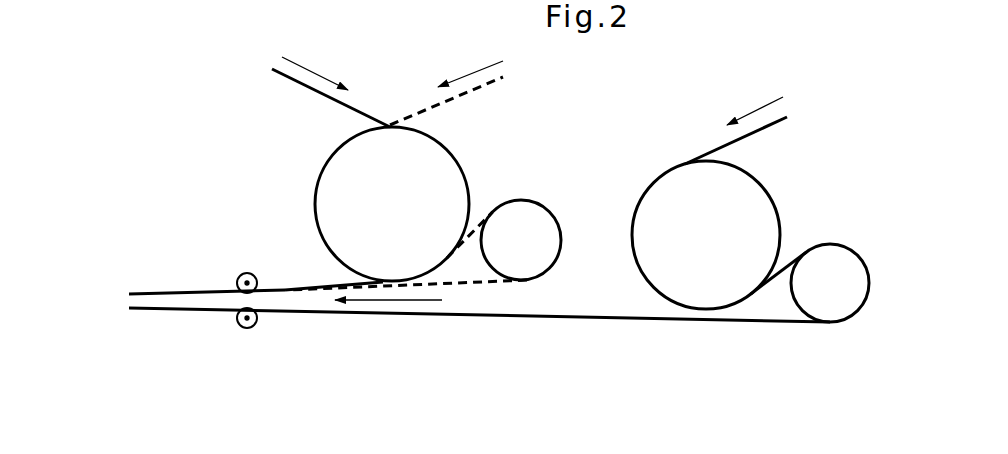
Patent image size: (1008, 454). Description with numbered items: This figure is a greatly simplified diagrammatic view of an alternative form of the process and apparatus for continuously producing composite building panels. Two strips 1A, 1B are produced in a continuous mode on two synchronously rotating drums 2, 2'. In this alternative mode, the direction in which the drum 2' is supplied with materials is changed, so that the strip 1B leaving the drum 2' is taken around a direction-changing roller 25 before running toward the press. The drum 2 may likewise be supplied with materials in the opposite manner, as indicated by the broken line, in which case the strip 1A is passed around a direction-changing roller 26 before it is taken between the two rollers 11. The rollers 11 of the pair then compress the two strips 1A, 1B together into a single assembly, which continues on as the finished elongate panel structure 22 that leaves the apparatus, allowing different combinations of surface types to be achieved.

The drum 2 is at (380, 204).
The direction-changing roller 26 is at (514, 220).
The drum 2' is at (706, 227).
The direction-changing roller 25 is at (830, 258).
The elongate panel structure 22 is at (166, 298).
The rollers 11 is at (243, 272).
The strip 1A is at (282, 292).
The strip 1B is at (283, 312).